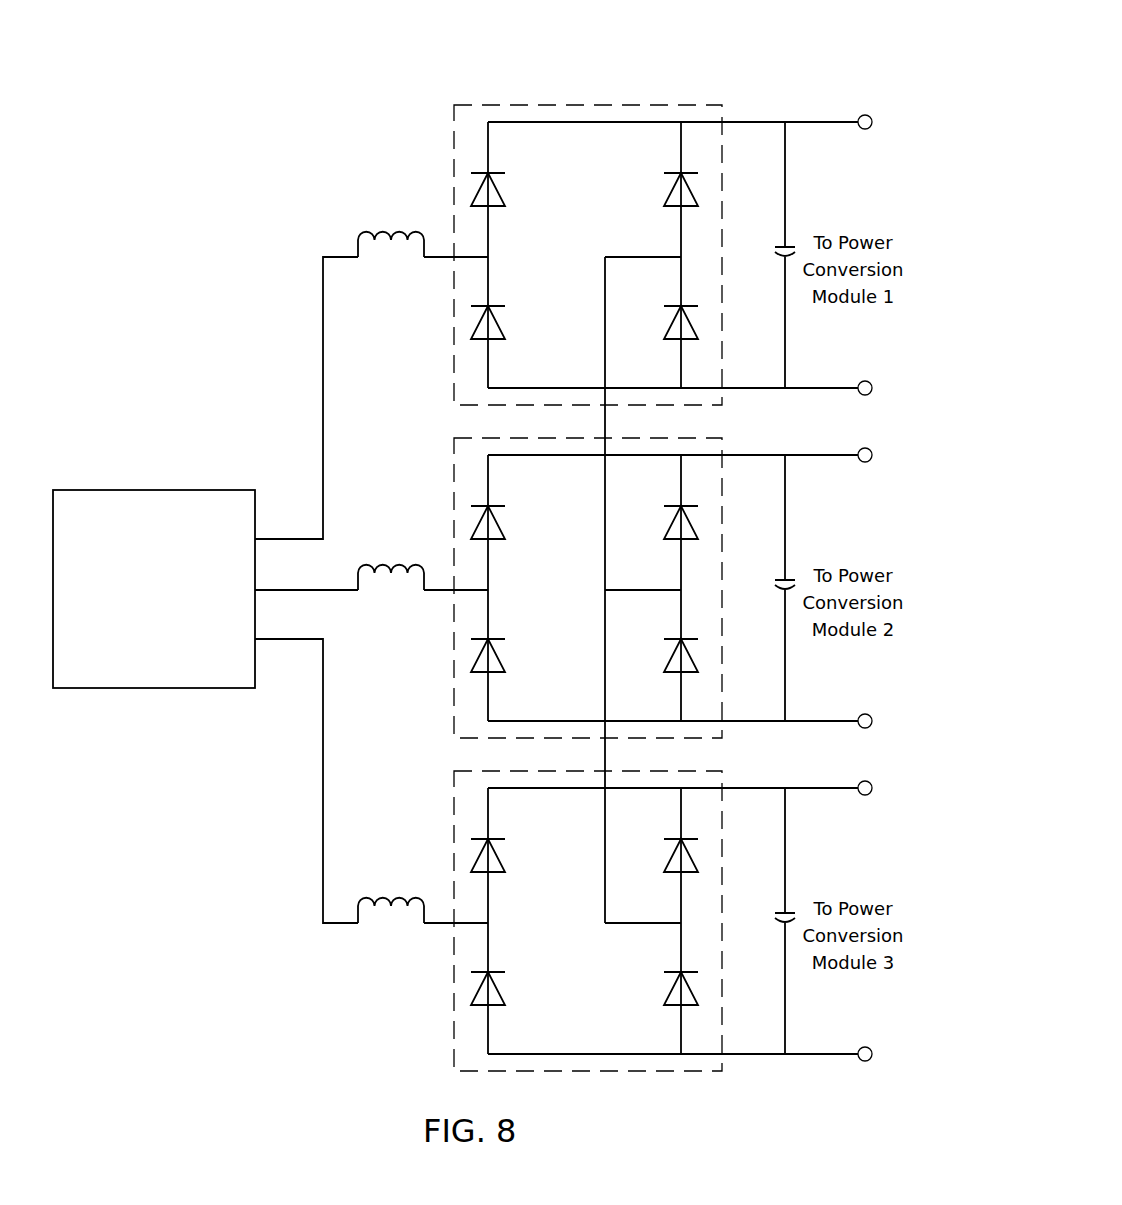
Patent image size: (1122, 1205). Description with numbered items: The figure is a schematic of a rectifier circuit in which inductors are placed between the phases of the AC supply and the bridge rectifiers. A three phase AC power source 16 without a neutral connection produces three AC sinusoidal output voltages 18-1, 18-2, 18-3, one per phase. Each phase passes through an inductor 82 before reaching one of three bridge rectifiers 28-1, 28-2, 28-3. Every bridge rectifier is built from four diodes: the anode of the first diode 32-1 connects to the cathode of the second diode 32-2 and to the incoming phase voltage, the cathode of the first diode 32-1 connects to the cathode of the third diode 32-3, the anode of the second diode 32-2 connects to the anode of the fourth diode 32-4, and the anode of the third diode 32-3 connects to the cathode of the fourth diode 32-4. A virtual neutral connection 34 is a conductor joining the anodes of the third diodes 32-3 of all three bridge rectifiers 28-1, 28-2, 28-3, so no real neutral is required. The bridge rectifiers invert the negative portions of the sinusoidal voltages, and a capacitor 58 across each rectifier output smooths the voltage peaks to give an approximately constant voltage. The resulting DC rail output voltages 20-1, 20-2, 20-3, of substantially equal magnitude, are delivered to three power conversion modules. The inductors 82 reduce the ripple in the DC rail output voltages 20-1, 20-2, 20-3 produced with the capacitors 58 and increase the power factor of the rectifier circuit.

The three phase AC power source 16 is at (105, 490).
The AC sinusoidal output voltage 18-1 is at (323, 386).
The AC sinusoidal output voltage 18-2 is at (338, 590).
The AC sinusoidal output voltage 18-3 is at (323, 736).
The inductor 82 is at (364, 232).
The bridge rectifier 28-1 is at (522, 105).
The bridge rectifier 28-2 is at (465, 438).
The bridge rectifier 28-3 is at (463, 771).
The first diode 32-1 is at (499, 197).
The second diode 32-2 is at (499, 330).
The third diode 32-3 is at (676, 197).
The fourth diode 32-4 is at (676, 330).
The virtual neutral connection 34 is at (604, 553).
The capacitor 58 is at (780, 247).
The DC rail output voltage 20-1 is at (826, 123).
The DC rail output voltage 20-2 is at (826, 456).
The DC rail output voltage 20-3 is at (826, 789).